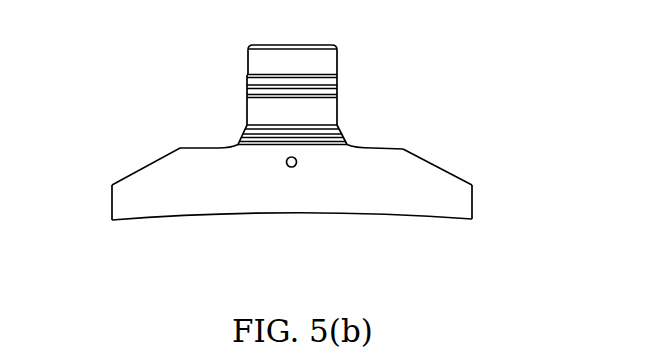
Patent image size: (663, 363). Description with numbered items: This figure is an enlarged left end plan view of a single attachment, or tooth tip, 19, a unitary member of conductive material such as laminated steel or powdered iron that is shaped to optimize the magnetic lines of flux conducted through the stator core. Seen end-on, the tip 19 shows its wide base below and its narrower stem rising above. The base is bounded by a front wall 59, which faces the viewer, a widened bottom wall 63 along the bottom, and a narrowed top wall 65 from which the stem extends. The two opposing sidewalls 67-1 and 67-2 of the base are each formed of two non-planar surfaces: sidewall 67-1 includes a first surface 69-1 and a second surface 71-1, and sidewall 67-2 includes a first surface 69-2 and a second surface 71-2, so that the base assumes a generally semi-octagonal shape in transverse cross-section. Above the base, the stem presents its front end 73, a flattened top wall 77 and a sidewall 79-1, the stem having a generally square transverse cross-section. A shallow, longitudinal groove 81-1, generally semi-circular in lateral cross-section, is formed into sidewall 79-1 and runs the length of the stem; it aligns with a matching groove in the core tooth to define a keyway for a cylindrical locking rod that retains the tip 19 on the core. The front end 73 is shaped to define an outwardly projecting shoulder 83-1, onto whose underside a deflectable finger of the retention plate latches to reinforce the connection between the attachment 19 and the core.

The attachment 19 is at (148, 250).
The front wall 59 is at (363, 198).
The widened bottom wall 63 is at (272, 215).
The narrowed top wall 65 is at (374, 147).
The sidewall 67-1 is at (111, 184).
The sidewall 67-2 is at (472, 184).
The first surface 69-1 is at (112, 202).
The first surface 69-2 is at (473, 209).
The second surface 71-1 is at (180, 149).
The second surface 71-2 is at (434, 163).
The front end 73 is at (333, 58).
The flattened top wall 77 is at (292, 45).
The sidewall 79-1 is at (247, 110).
The longitudinal groove 81-1 is at (250, 72).
The shoulder 83-1 is at (331, 81).